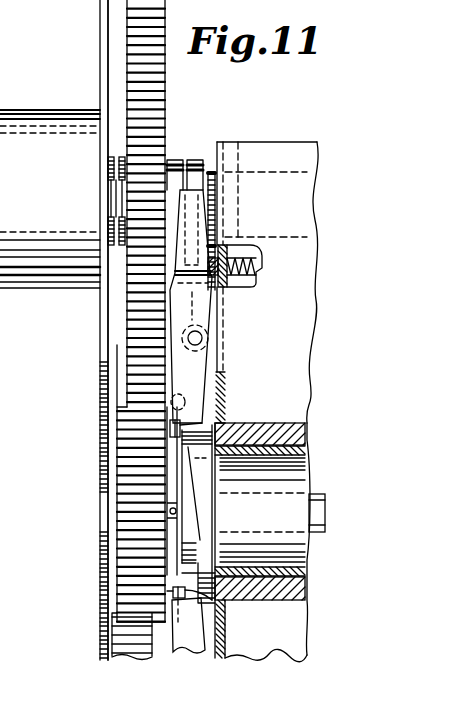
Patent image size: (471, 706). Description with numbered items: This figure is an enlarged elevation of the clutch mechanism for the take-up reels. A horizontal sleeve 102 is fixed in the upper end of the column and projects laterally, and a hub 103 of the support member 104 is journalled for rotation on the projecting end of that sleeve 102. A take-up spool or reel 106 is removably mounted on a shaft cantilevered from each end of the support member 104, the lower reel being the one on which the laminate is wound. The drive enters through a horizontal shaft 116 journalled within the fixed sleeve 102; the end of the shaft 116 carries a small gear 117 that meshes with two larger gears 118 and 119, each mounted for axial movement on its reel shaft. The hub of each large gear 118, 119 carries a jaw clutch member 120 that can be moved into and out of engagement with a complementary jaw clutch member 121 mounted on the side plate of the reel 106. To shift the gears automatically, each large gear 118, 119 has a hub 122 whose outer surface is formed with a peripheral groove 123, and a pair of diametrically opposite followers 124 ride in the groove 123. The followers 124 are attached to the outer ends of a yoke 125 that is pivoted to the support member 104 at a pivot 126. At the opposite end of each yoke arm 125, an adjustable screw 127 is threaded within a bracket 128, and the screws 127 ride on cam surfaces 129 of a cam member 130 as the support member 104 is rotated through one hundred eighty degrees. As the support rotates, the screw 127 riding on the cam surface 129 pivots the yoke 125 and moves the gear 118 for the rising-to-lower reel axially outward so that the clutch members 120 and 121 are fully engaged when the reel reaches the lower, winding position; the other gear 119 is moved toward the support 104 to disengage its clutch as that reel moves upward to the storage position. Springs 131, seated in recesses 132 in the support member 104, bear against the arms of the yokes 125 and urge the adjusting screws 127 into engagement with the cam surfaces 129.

The horizontal sleeve 102 is at (303, 457).
The hub 103 is at (297, 412).
The support member 104 is at (290, 152).
The take-up spool or reel 106 is at (99, 36).
The horizontal shaft 116 is at (316, 497).
The small gear 117 is at (128, 440).
The large gear 118 is at (162, 88).
The large gear 119 is at (122, 631).
The jaw clutch member 120 is at (110, 157).
The complementary jaw clutch member 121 is at (113, 178).
The hub 122 is at (173, 158).
The peripheral groove 123 is at (195, 158).
The followers 124 is at (232, 193).
The yoke 125 is at (202, 312).
The pivot 126 is at (202, 338).
The adjustable screw 127 is at (183, 428).
The bracket 128 is at (183, 400).
The cam surface 129 is at (199, 492).
The cam member 130 is at (211, 521).
The spring 131 is at (262, 252).
The recess 132 is at (258, 265).